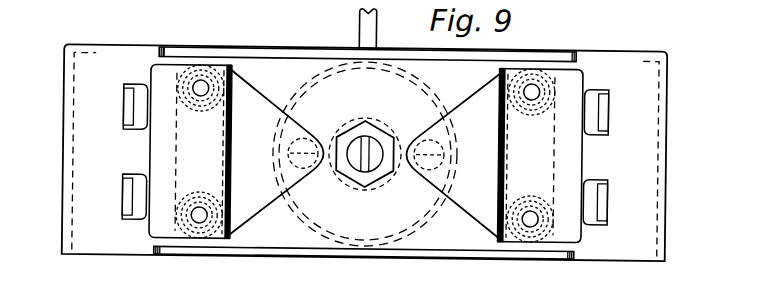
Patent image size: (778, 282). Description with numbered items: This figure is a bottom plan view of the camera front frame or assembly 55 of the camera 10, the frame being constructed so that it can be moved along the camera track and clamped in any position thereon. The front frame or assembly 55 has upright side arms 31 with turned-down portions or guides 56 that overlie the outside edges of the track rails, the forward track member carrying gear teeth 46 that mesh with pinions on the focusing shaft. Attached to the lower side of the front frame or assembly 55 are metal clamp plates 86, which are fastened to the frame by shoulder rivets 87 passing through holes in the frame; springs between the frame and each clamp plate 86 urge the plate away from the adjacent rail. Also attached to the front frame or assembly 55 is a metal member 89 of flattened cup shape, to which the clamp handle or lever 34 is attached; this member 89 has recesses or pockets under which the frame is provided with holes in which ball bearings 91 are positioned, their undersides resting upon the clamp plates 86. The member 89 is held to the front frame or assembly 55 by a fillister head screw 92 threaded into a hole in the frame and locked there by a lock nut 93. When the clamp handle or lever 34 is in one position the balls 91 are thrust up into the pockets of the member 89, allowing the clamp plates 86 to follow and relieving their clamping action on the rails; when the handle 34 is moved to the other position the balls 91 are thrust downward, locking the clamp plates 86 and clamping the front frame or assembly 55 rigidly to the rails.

The latch assembly 10 is at (255, 6).
The upright side arms 31 is at (73, 152).
The clamp handle or lever 34 is at (375, 28).
The gear teeth 46 is at (616, 4).
The camera front frame or assembly 55 is at (302, 247).
The guides 56 is at (123, 105).
The clamp plates 86 is at (285, 212).
The shoulder rivets 87 is at (200, 92).
The metal member of flattened cup shape 89 is at (310, 91).
The ball bearings 91 is at (288, 154).
The fillister head screw 92 is at (356, 168).
The lock nut 93 is at (365, 136).